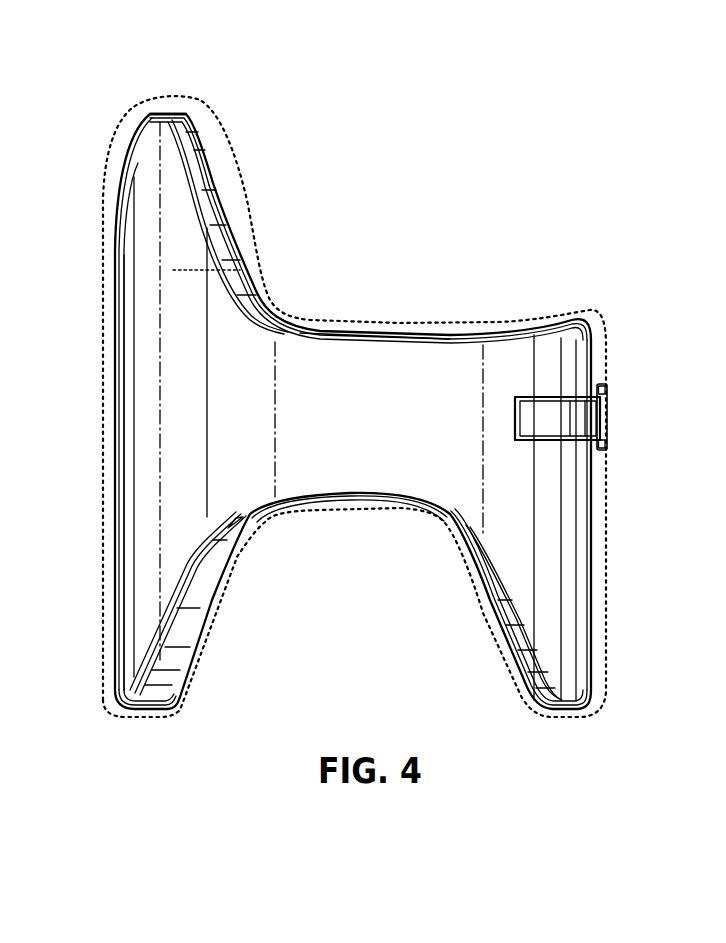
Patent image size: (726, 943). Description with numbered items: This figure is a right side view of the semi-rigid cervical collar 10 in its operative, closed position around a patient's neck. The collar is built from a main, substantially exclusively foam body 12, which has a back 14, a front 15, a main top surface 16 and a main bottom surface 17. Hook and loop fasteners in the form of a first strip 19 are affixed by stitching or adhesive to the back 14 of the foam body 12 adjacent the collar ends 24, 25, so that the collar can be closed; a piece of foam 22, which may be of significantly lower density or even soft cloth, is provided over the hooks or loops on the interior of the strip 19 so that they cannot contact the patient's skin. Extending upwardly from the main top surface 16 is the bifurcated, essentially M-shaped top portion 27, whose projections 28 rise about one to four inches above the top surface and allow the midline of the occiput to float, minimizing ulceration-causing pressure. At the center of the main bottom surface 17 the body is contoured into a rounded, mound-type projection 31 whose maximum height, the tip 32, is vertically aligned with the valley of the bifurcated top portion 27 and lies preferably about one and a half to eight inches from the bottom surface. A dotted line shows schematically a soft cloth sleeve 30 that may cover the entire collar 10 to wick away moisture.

The semi-rigid cervical collar 10 is at (630, 240).
The foam body 12 is at (150, 513).
The back 14 is at (116, 460).
The front 15 is at (247, 270).
The main top surface 16 is at (381, 333).
The main bottom surface 17 is at (370, 497).
The first strip 19 is at (533, 419).
The piece of foam 22 is at (598, 386).
The end 24 is at (592, 492).
The end 25 is at (592, 492).
The bifurcated top portion 27 is at (101, 134).
The projection 28 is at (167, 124).
The soft cloth sleeve 30 is at (247, 193).
The projection 31 is at (133, 637).
The tip 32 is at (142, 707).